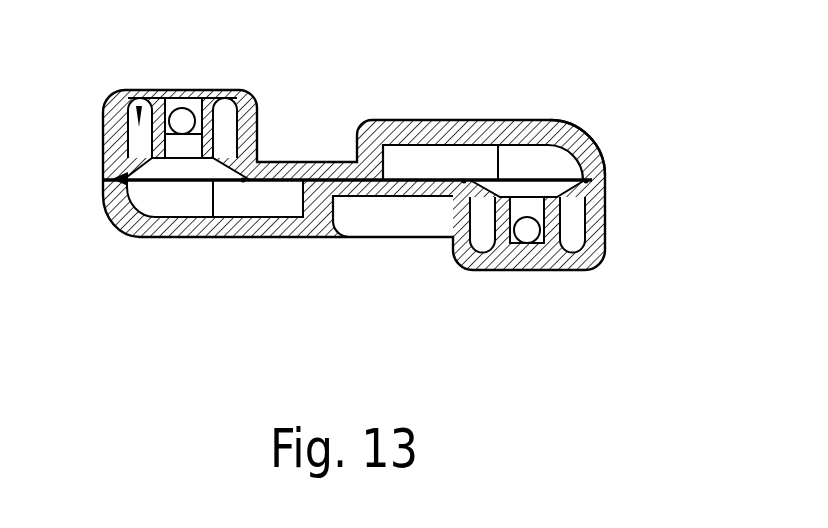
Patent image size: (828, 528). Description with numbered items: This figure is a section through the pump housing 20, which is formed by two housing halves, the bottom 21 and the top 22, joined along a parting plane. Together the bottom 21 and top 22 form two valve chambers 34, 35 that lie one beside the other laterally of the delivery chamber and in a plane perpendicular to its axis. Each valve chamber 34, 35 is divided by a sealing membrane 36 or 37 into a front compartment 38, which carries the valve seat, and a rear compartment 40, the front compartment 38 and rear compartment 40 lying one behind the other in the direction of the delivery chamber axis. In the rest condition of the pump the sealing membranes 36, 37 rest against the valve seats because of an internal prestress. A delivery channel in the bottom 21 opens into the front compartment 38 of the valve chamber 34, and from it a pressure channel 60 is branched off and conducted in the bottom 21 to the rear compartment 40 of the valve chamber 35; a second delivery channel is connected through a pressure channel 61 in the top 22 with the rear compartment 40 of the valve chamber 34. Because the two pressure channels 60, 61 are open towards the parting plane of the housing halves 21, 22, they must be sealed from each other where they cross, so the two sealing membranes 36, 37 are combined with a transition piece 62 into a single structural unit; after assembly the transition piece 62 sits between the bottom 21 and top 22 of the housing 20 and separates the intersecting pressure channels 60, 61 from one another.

The housing 20 is at (353, 94).
The bottom 21 is at (296, 237).
The top 22 is at (405, 122).
The valve chamber 34 is at (559, 160).
The valve chamber 35 is at (138, 90).
The sealing membrane 36 is at (462, 248).
The sealing membrane 37 is at (262, 105).
The front compartment 38 is at (227, 112).
The rear compartment 40 is at (515, 160).
The pressure channel 60 is at (258, 205).
The pressure channel 61 is at (450, 158).
The transition piece 62 is at (403, 210).